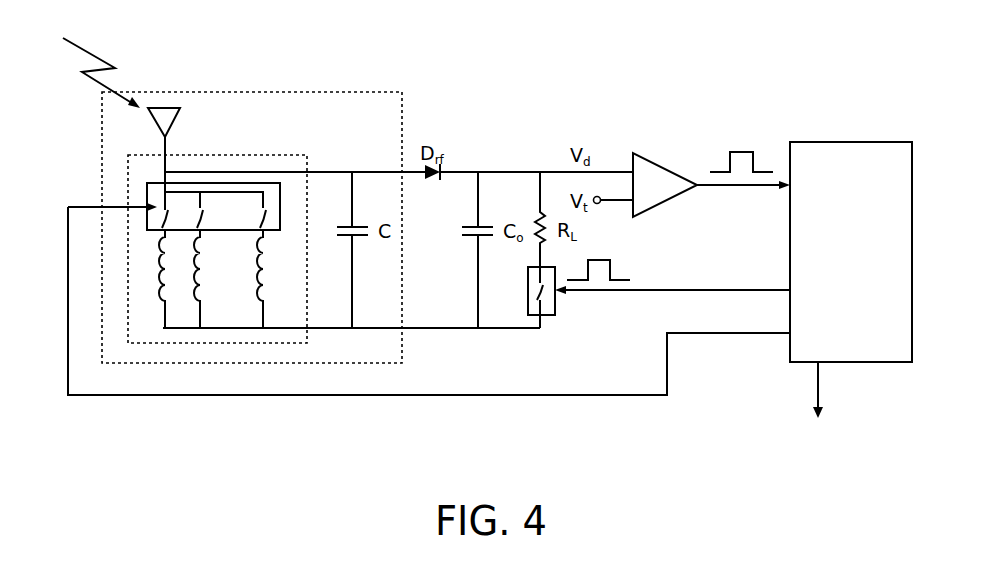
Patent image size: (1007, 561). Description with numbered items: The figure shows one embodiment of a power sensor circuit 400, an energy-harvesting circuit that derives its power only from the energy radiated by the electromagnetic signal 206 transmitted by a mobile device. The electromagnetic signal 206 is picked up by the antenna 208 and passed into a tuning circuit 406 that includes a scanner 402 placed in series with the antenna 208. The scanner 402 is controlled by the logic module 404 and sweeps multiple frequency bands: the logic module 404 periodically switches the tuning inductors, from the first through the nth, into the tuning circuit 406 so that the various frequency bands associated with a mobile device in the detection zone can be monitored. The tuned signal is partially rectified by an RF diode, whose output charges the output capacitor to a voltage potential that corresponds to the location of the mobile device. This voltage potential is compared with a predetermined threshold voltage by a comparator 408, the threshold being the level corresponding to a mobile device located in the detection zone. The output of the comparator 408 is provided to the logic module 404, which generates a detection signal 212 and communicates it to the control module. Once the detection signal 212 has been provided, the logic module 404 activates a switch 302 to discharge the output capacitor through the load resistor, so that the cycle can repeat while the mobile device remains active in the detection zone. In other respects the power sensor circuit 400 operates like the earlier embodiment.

The electromagnetic signal 206 is at (87, 50).
The antenna 208 is at (167, 106).
The power sensor circuit 400 is at (337, 92).
The tuning circuit 406 is at (203, 155).
The scanner 402 is at (283, 190).
The switch 302 is at (528, 308).
The comparator 408 is at (652, 160).
The logic module 404 is at (851, 252).
The detection signal 212 is at (820, 392).